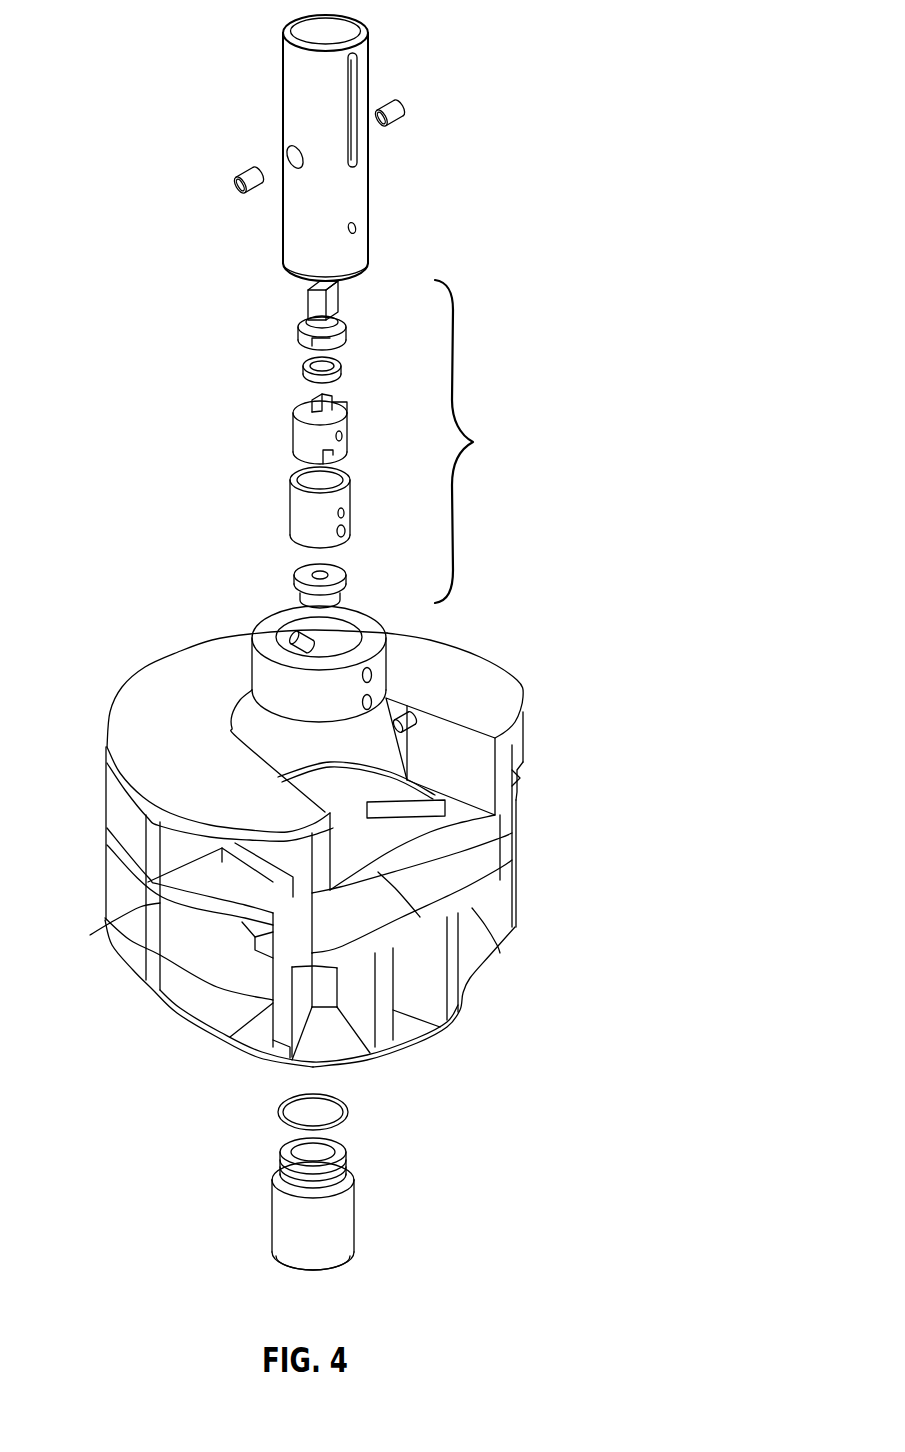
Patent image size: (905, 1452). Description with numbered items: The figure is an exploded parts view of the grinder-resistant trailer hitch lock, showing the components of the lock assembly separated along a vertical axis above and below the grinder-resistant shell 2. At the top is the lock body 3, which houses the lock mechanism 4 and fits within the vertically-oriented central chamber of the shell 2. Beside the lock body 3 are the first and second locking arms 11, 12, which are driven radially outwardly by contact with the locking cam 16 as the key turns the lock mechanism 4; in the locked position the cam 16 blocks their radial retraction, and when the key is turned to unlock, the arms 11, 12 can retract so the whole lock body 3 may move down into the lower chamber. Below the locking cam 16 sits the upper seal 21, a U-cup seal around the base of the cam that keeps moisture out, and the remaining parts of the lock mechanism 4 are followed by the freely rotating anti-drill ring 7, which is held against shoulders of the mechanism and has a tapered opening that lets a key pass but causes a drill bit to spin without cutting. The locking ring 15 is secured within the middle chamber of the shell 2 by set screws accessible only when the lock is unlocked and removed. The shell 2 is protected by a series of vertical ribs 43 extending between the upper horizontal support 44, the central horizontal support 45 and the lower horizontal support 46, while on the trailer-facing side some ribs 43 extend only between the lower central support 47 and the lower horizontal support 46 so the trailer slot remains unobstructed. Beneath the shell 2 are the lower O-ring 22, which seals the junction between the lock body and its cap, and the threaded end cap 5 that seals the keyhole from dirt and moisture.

The grinder-resistant shell 2 is at (107, 743).
The lock body 3 is at (283, 98).
The lock mechanism 4 is at (394, 441).
The threaded end cap 5 is at (272, 1218).
The anti-drill ring 7 is at (345, 587).
The first locking arm 11 is at (232, 182).
The second locking arm 12 is at (407, 100).
The locking ring 15 is at (250, 662).
The locking cam 16 is at (308, 303).
The upper seal 21 is at (300, 368).
The lower O-ring 22 is at (278, 1113).
The vertical ribs 43 is at (115, 938).
The upper horizontal support 44 is at (523, 708).
The central horizontal support 45 is at (525, 782).
The lower horizontal support 46 is at (437, 1033).
The lower central support 47 is at (500, 952).